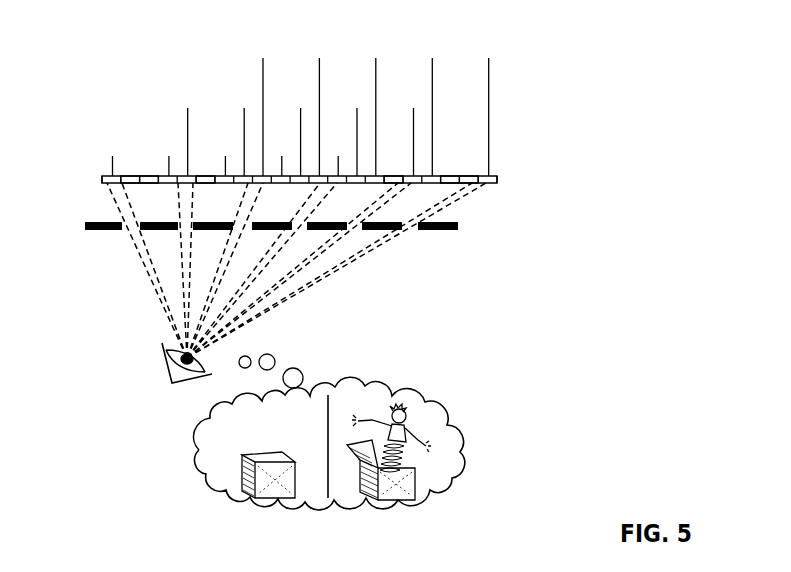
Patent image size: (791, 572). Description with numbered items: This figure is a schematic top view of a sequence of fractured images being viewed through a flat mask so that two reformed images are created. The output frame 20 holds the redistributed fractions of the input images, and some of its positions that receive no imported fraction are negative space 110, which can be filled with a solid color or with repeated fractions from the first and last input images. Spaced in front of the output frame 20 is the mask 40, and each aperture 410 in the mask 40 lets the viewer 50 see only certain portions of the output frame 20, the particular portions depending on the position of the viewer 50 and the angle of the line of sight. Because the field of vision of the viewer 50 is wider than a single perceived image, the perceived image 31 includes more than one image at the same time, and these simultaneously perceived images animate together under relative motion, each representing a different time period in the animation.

The output frame 20 is at (100, 178).
The negative space 110 is at (301, 99).
The mask 40 is at (102, 232).
The aperture 410 is at (131, 238).
The viewer 50 is at (166, 372).
The perceived image 31 is at (456, 441).